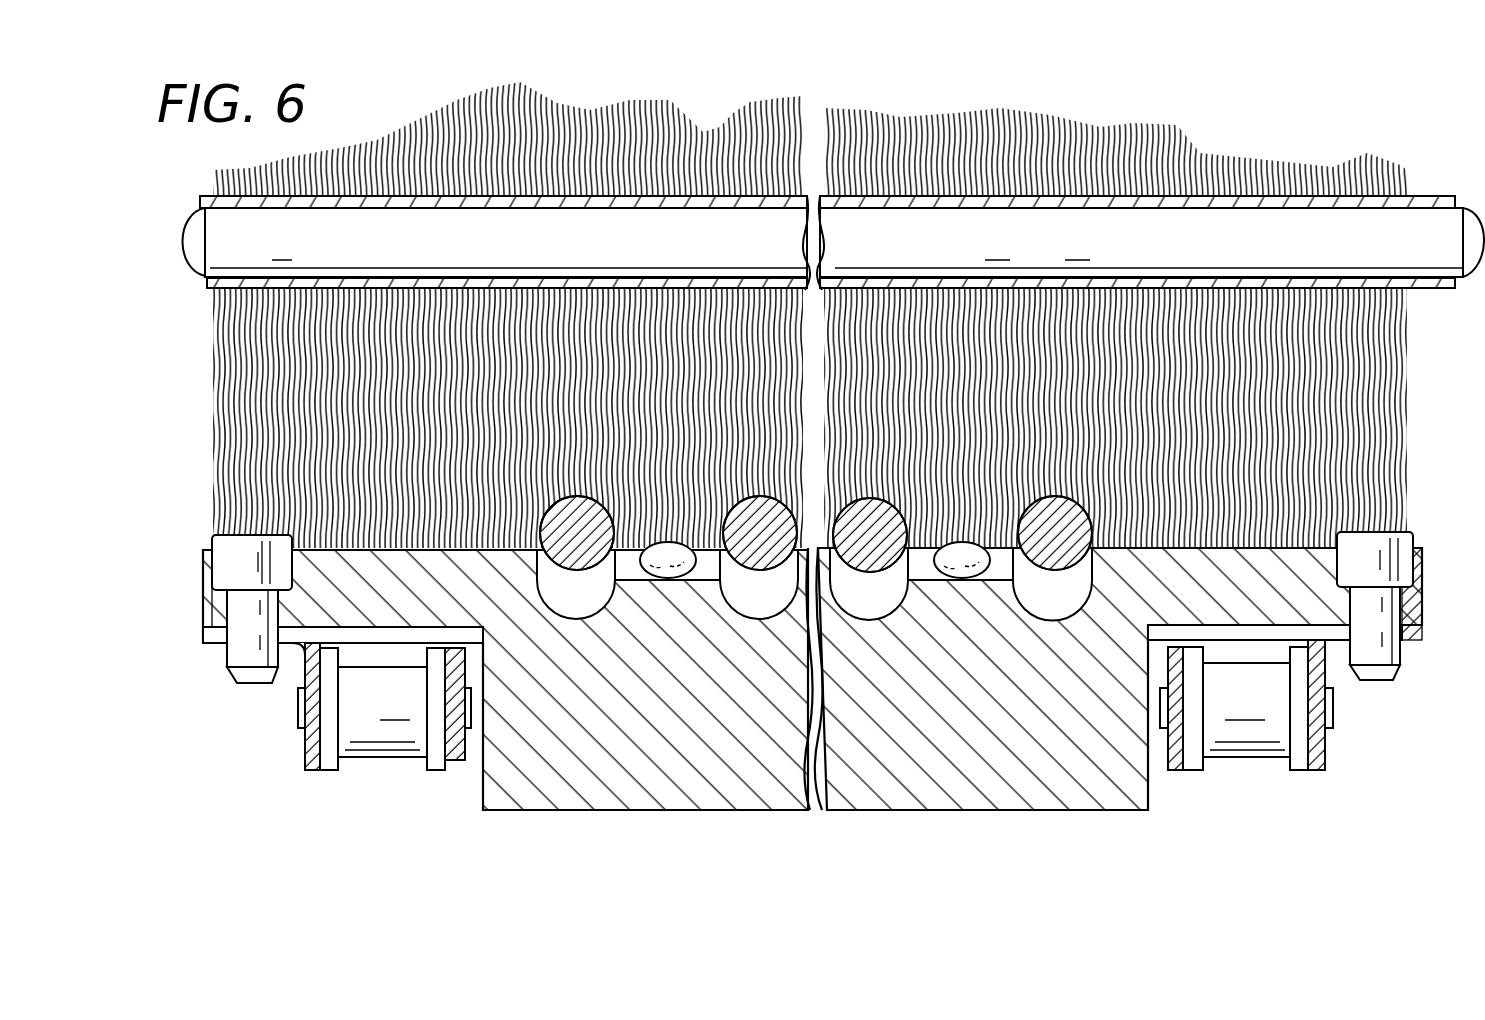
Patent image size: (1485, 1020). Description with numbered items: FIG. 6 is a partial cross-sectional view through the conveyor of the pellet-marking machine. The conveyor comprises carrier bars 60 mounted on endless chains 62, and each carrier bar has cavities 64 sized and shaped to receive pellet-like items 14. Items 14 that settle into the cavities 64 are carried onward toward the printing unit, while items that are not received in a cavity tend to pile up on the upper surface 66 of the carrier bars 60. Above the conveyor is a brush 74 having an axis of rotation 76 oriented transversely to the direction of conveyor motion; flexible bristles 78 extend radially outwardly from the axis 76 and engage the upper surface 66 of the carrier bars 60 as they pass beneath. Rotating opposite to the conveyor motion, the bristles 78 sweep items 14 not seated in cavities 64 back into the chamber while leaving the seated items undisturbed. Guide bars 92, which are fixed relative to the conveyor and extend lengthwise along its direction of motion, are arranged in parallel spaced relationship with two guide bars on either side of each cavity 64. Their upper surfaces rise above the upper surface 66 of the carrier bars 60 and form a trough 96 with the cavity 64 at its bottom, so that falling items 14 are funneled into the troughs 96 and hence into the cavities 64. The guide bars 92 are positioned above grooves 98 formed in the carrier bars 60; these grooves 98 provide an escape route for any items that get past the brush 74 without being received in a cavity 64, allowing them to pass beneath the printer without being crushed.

The brush 74 is at (1114, 132).
The axis of rotation 76 is at (215, 250).
The flexible bristles 78 is at (213, 367).
The carrier bars 60 is at (563, 803).
The endless chains 62 is at (317, 771).
The upper surface 66 is at (1257, 542).
The guide bars 92 is at (577, 552).
The trough 96 is at (628, 523).
The grooves 98 is at (758, 597).
The cavities 64 is at (943, 582).
The pellet-like items 14 is at (977, 567).